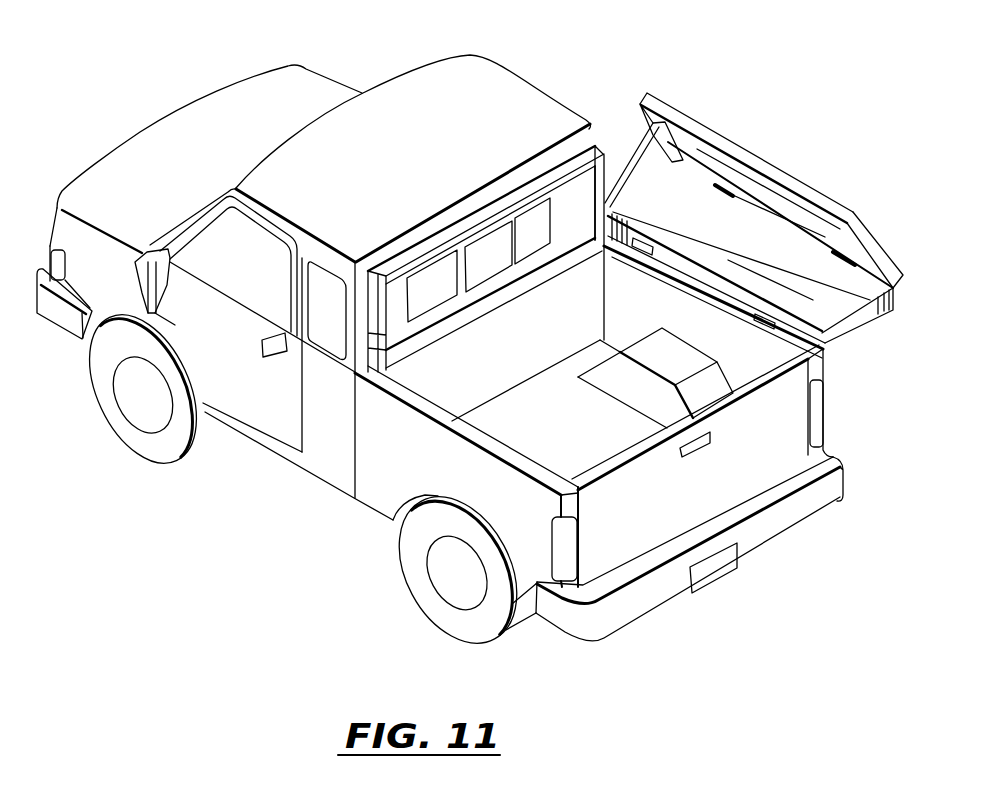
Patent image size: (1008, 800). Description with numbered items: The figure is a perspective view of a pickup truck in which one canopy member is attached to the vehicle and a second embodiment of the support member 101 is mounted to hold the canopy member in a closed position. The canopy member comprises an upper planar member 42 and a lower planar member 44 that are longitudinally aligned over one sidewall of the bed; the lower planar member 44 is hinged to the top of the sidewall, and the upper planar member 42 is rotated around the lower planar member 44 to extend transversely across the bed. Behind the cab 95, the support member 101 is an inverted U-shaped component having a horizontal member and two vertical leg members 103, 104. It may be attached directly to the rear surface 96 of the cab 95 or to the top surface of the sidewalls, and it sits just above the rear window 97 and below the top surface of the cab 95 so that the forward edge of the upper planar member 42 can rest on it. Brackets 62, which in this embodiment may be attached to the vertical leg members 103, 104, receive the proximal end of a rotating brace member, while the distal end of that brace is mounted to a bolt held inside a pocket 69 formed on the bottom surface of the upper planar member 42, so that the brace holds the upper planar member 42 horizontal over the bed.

The cab 95 is at (428, 75).
The support member 101 is at (519, 196).
The rear surface 96 is at (472, 203).
The rear window 97 is at (485, 268).
The vertical leg member 103 is at (593, 212).
The vertical leg member 104 is at (390, 352).
The bracket 62 is at (383, 328).
The pocket 69 is at (663, 135).
The upper planar member 42 is at (742, 152).
The lower planar member 44 is at (815, 297).